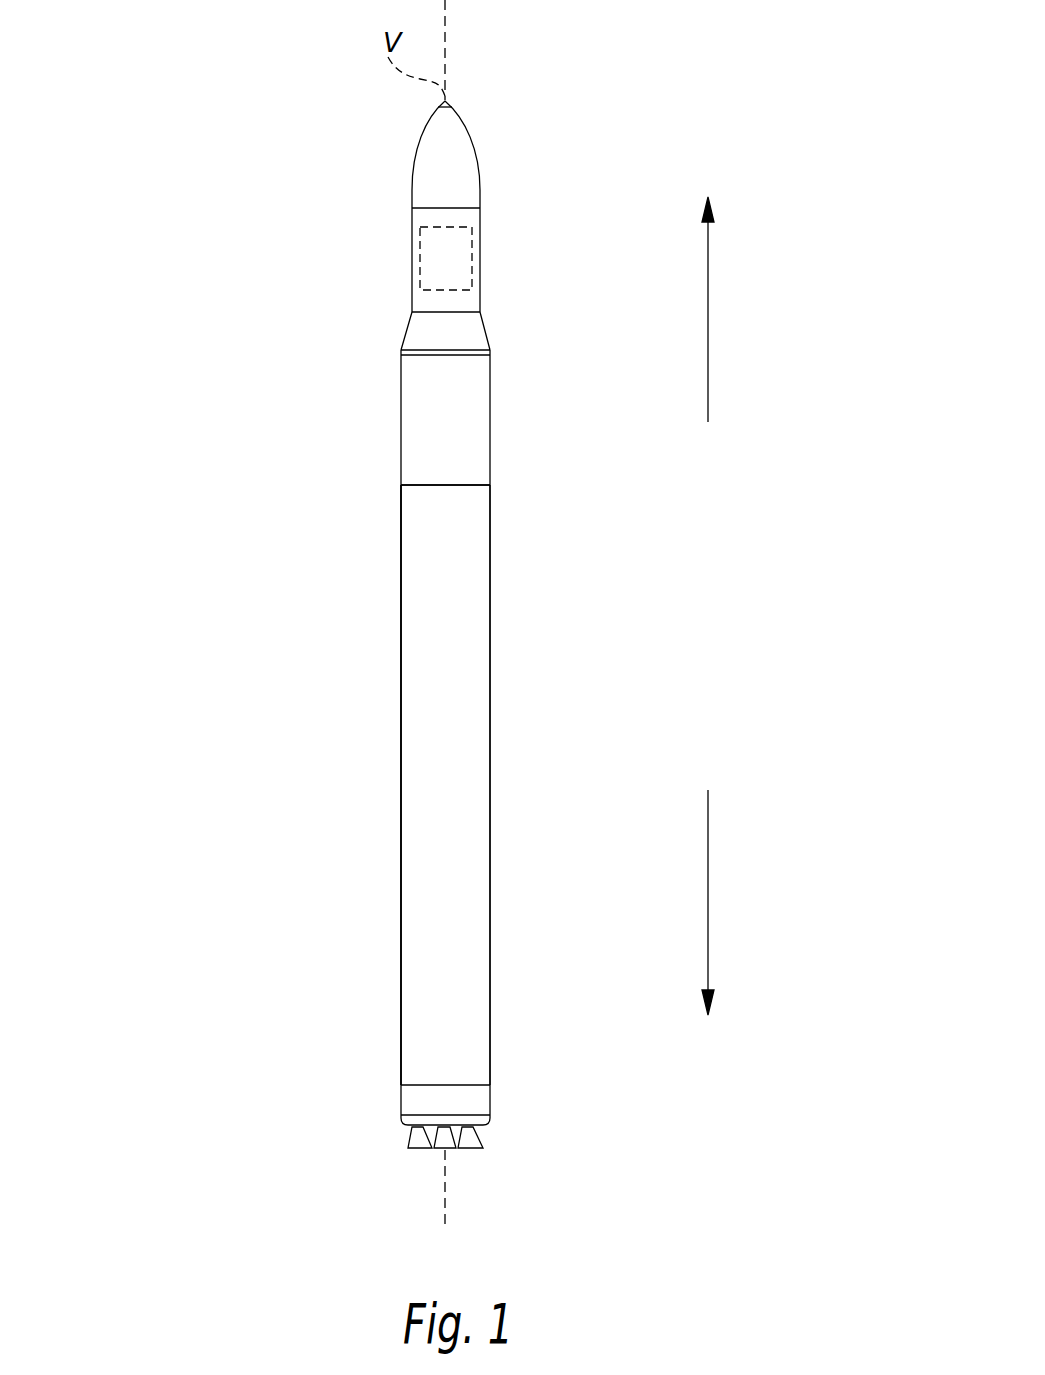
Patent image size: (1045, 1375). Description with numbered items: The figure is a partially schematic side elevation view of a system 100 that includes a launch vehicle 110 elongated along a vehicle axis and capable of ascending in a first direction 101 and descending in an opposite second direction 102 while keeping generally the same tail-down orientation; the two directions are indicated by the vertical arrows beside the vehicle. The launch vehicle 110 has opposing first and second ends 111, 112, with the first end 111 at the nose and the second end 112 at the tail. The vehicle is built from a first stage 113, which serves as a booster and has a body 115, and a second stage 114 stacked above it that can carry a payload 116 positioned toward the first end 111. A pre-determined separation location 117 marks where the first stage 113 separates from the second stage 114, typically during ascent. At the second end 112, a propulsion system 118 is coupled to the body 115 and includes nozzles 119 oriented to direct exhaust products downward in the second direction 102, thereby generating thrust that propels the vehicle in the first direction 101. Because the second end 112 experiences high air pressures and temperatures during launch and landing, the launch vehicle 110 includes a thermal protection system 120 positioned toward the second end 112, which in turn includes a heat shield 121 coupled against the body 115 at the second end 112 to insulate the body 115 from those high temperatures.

The system 100 is at (248, 241).
The first direction 101 is at (709, 323).
The second direction 102 is at (709, 902).
The launch vehicle 110 is at (286, 650).
The first end 111 is at (475, 78).
The second end 112 is at (363, 1215).
The first stage 113 is at (563, 742).
The second stage 114 is at (563, 401).
The body 115 is at (400, 880).
The payload 116 is at (472, 260).
The separation location 117 is at (384, 484).
The propulsion system 118 is at (424, 1169).
The nozzles 119 is at (472, 1148).
The thermal protection system 120 is at (395, 1139).
The heat shield 121 is at (402, 1122).